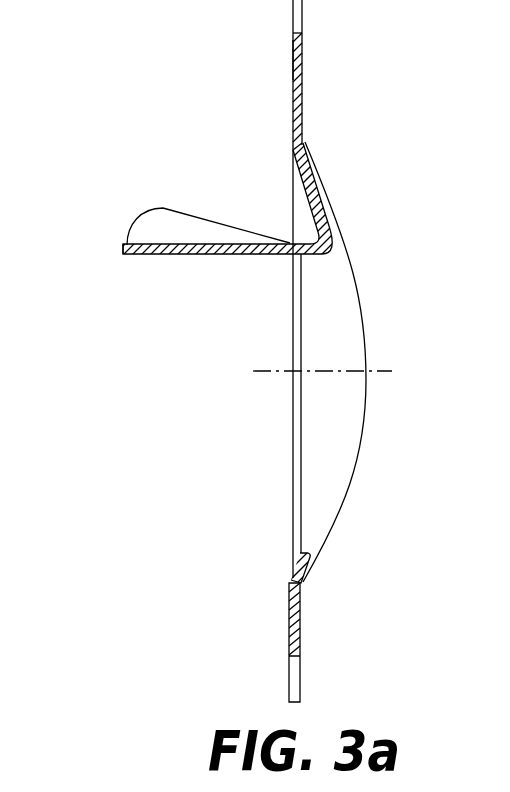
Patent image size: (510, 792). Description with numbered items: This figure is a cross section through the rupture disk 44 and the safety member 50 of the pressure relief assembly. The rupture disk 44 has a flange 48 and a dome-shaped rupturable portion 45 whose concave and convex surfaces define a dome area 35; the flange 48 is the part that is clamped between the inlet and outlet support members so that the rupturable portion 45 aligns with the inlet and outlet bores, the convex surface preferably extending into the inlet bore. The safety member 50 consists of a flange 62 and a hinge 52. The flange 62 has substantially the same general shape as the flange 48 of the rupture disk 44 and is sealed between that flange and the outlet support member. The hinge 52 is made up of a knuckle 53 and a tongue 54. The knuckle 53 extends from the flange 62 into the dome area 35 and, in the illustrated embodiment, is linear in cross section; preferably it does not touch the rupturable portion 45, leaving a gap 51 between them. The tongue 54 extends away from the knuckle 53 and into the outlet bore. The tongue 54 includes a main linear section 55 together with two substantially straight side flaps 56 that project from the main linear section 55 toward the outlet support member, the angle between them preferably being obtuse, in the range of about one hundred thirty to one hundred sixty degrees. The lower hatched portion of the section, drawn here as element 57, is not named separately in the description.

The dome area 35 is at (342, 409).
The rupture disk 44 is at (384, 362).
The rupturable portion 45 is at (364, 402).
The flange 48 is at (304, 92).
The safety member 50 is at (245, 212).
The gap 51 is at (334, 213).
The hinge 52 is at (316, 265).
The knuckle 53 is at (318, 197).
The tongue 54 is at (122, 252).
The main linear section 55 is at (153, 256).
The side flaps 56 is at (155, 228).
The lower post section 57 is at (300, 623).
The flange 62 is at (292, 62).